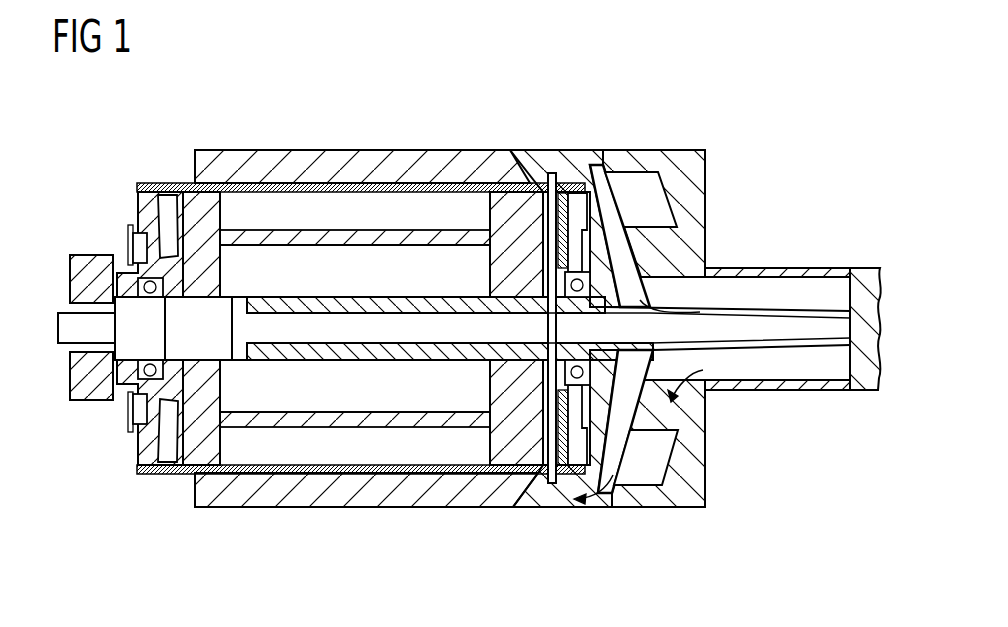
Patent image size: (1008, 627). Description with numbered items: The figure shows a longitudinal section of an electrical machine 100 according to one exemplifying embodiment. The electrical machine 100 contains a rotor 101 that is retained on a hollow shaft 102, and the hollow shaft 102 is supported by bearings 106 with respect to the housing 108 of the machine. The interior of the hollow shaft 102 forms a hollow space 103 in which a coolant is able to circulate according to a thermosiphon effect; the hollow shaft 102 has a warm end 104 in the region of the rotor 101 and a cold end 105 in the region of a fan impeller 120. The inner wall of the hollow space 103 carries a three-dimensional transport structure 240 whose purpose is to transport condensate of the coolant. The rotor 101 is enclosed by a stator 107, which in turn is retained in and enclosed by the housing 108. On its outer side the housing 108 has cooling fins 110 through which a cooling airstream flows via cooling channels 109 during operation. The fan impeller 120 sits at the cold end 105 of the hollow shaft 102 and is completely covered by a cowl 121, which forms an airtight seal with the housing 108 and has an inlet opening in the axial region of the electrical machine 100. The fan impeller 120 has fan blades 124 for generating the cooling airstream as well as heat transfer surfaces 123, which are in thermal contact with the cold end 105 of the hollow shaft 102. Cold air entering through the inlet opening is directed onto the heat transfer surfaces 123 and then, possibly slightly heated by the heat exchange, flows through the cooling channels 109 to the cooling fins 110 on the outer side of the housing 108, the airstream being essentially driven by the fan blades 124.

The electrical machine 100 is at (762, 509).
The rotor 101 is at (376, 287).
The hollow shaft 102 is at (204, 290).
The hollow space 103 is at (461, 333).
The warm end 104 is at (268, 333).
The cold end 105 is at (763, 329).
The bearings 106 is at (127, 264).
The stator 107 is at (378, 224).
The housing 108 is at (162, 475).
The cooling channels 109 is at (563, 168).
The cooling fins 110 is at (363, 500).
The fan impeller 120 is at (630, 423).
The cowl 121 is at (706, 186).
The heat transfer surfaces 123 is at (823, 290).
The fan blades 124 is at (637, 192).
The three-dimensional transport structure 240 is at (675, 309).